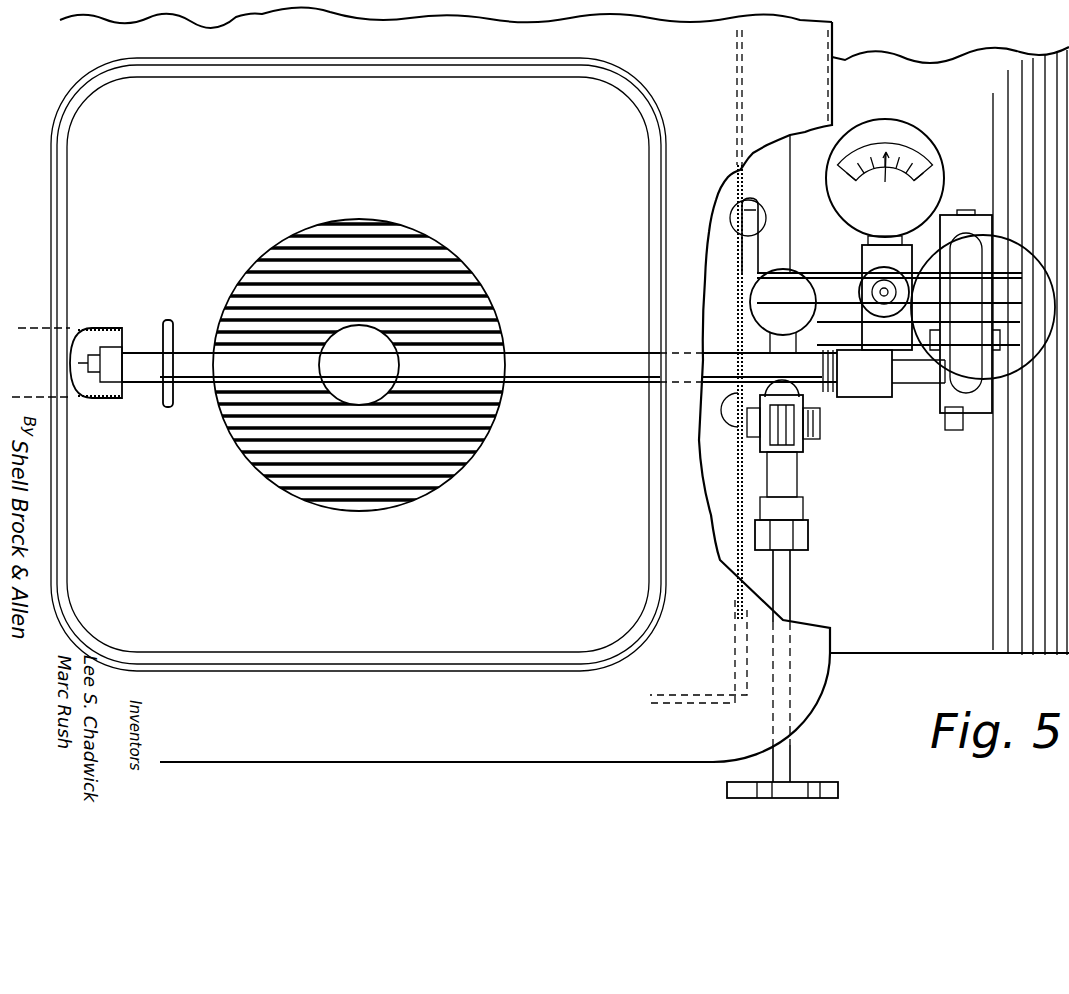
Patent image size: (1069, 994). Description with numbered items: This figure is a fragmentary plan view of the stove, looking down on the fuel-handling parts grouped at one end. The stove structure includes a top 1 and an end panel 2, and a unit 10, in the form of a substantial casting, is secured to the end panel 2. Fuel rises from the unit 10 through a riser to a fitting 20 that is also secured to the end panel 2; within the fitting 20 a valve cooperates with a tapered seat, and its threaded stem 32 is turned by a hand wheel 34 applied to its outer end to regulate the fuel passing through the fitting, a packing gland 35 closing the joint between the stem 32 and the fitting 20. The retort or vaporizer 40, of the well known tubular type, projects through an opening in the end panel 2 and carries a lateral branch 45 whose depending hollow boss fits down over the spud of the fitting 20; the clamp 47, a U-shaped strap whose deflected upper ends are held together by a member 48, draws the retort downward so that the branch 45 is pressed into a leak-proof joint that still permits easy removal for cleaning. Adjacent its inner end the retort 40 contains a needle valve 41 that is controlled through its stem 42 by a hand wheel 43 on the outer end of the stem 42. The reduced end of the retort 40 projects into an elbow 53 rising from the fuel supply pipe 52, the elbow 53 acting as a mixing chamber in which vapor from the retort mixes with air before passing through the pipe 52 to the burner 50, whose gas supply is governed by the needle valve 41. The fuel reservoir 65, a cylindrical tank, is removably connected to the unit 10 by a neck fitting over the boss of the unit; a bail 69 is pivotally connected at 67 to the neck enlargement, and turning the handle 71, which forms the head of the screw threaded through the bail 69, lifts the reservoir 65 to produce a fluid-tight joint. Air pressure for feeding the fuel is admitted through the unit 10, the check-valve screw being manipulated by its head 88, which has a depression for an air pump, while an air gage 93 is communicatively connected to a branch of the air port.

The top 1 is at (358, 390).
The end panel 2 is at (736, 478).
The unit 10 is at (832, 287).
The fitting 20 is at (783, 311).
The stem 32 is at (792, 586).
The hand wheel 34 is at (822, 782).
The packing gland 35 is at (810, 540).
The retort or vaporizer 40 is at (596, 382).
The needle valve 41 is at (90, 398).
The stem 42 is at (920, 394).
The hand wheel 43 is at (955, 430).
The lateral branch 45 is at (792, 470).
The clamp 47 is at (821, 430).
The member 48 is at (805, 448).
The burner 50 is at (424, 233).
The fuel supply pipe 52 is at (158, 400).
The elbow 53 is at (110, 330).
The fuel reservoir 65 is at (949, 573).
The pivotal connection 67 is at (968, 210).
The bail 69 is at (985, 236).
The handle 71 is at (970, 268).
The head 88 is at (885, 293).
The air gage 93 is at (925, 142).